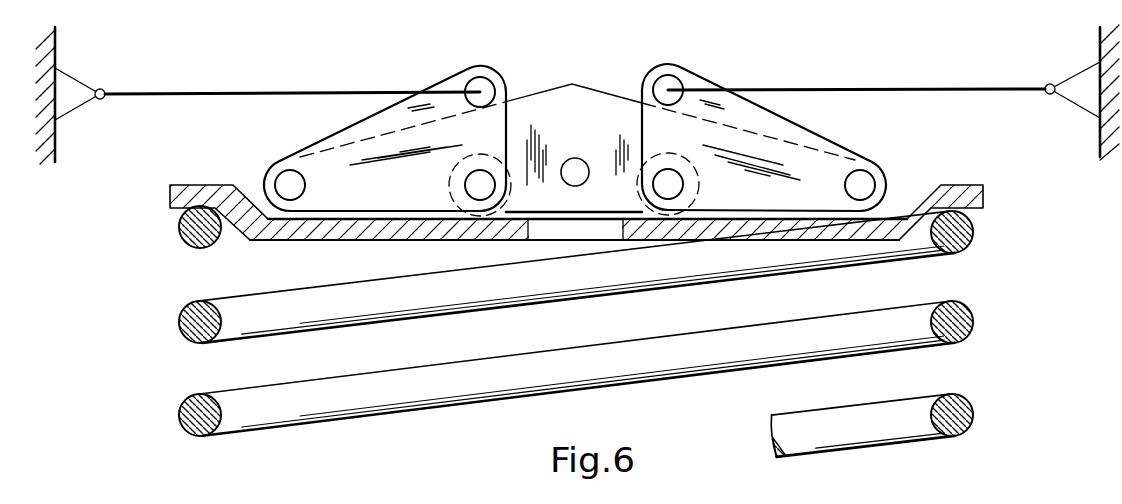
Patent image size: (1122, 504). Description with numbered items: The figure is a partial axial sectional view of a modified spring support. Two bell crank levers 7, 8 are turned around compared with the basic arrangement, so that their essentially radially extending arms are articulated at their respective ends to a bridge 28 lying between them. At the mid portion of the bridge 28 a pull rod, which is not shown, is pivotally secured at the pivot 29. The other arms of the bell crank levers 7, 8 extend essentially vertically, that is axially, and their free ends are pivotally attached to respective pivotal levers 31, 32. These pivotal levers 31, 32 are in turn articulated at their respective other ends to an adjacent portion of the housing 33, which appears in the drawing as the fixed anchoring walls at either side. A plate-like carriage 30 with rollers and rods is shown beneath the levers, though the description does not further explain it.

The bell crank lever 7 is at (378, 152).
The bell crank lever 8 is at (742, 146).
The bridge 28 is at (542, 118).
The pivot for the pull rod 29 is at (584, 163).
The carriage plate 30 is at (333, 228).
The pivotal lever 31 is at (184, 92).
The pivotal lever 32 is at (855, 88).
The housing 33 is at (56, 132).